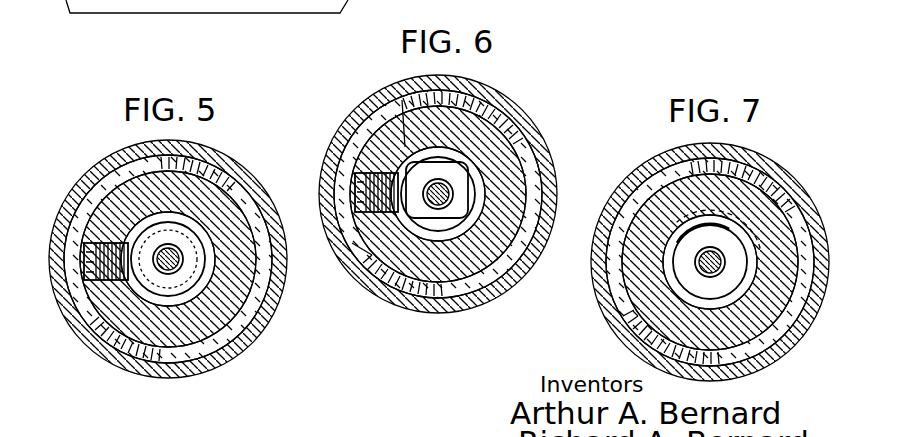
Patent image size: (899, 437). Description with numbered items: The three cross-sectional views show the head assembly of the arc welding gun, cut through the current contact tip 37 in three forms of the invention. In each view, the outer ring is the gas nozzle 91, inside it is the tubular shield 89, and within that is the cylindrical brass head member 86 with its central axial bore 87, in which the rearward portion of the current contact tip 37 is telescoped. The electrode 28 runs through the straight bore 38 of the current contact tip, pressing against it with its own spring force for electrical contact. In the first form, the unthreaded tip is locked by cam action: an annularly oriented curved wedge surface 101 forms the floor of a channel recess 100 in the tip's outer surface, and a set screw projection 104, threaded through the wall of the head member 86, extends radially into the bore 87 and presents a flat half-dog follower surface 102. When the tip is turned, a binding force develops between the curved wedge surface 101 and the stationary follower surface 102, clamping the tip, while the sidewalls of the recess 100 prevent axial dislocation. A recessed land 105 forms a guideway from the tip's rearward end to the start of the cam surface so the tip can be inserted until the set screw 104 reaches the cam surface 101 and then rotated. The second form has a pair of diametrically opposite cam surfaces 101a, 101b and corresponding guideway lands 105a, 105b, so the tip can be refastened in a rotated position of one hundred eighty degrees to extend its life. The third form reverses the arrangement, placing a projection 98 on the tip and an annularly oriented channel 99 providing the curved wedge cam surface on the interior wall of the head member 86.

In FIG. 5, the electrode 28 is at (160, 293).
In FIG. 6, the electrode 28 is at (512, 172).
In FIG. 7, the electrode 28 is at (704, 263).
In FIG. 5, the current contact tip 37 is at (183, 243).
In FIG. 5, the straight bore 38 is at (152, 213).
In FIG. 5, the head member 86 is at (276, 290).
In FIG. 6, the head member 86 is at (408, 84).
In FIG. 7, the head member 86 is at (727, 197).
In FIG. 5, the central axial bore 87 is at (262, 305).
In FIG. 6, the central axial bore 87 is at (452, 193).
In FIG. 5, the tubular shield 89 is at (218, 200).
In FIG. 6, the tubular shield 89 is at (498, 284).
In FIG. 7, the tubular shield 89 is at (789, 337).
In FIG. 5, the gas nozzle 91 is at (222, 160).
In FIG. 6, the gas nozzle 91 is at (368, 102).
In FIG. 7, the gas nozzle 91 is at (668, 152).
In FIG. 7, the projection 98 is at (803, 203).
In FIG. 7, the annularly oriented channel 99 is at (683, 222).
In FIG. 5, the channel recess 100 is at (173, 283).
In FIG. 5, the curved wedge surface 101 is at (205, 355).
In FIG. 6, the cam surface 101a is at (366, 270).
In FIG. 6, the cam surface 101b is at (475, 166).
In FIG. 5, the follower surface 102 is at (130, 320).
In FIG. 5, the set screw projection 104 is at (84, 252).
In FIG. 6, the set screw projection 104 is at (353, 184).
In FIG. 5, the recessed land 105 is at (208, 257).
In FIG. 6, the recessed land guideway 105a is at (438, 230).
In FIG. 6, the recessed land guideway 105b is at (445, 145).